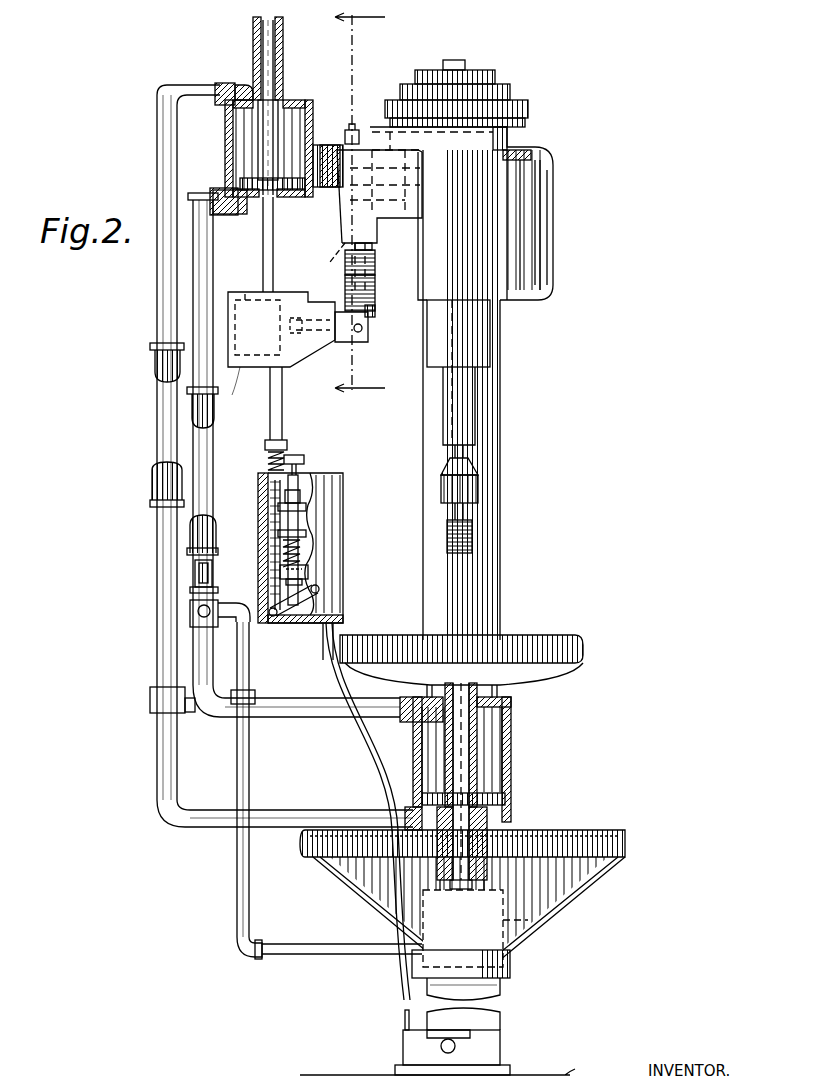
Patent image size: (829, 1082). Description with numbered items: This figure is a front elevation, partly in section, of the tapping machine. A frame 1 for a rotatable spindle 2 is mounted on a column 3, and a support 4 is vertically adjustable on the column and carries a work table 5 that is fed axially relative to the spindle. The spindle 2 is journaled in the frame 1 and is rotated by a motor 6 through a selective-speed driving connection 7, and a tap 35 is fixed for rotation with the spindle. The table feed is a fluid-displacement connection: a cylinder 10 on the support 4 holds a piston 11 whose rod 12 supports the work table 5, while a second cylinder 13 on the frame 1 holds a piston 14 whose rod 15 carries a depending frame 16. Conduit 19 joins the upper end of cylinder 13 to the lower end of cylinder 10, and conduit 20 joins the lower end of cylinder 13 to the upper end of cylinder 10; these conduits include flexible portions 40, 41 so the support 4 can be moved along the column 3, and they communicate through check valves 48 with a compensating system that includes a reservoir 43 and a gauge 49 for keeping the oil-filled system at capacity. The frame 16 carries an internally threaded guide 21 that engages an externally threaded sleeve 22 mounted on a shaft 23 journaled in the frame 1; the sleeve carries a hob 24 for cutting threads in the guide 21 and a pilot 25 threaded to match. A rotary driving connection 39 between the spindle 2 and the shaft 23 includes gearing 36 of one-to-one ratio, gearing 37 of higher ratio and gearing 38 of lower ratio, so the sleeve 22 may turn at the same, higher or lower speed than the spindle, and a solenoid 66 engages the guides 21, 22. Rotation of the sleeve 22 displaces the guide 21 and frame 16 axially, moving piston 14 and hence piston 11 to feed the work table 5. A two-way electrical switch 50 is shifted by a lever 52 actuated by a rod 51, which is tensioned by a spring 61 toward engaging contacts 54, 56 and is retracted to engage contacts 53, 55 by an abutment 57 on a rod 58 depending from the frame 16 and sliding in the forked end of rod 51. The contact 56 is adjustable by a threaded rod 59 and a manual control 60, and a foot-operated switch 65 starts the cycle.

The frame 1 is at (480, 188).
The spindle 2 is at (470, 350).
The column 3 is at (360, 199).
The support 4 is at (535, 842).
The work table 5 is at (575, 655).
The motor 6 is at (548, 236).
The selective-speed driving connection 7 is at (509, 76).
The cylinder 10 is at (510, 758).
The piston 11 is at (495, 800).
The piston rod 12 is at (455, 742).
The second cylinder 13 is at (290, 118).
The piston 14 is at (284, 178).
The piston rod 15 is at (276, 262).
The frame 16 is at (246, 370).
The conduit 19 is at (162, 265).
The conduit 20 is at (202, 278).
The threaded guide 21 is at (362, 338).
The threaded sleeve 22 is at (386, 321).
The shaft 23 is at (336, 257).
The hob 24 is at (345, 270).
The pilot 25 is at (377, 330).
The tap 35 is at (470, 530).
The gearing 36 is at (420, 182).
The gearing 37 is at (418, 212).
The gearing 38 is at (420, 160).
The rotary driving connection 39 is at (365, 130).
The flexible portion 40 is at (163, 413).
The flexible portion 41 is at (200, 470).
The reservoir 43 is at (540, 925).
The check valve 48 is at (244, 603).
The gauge 49 is at (208, 578).
The two-way electrical switch 50 is at (310, 540).
The rod 51 is at (270, 513).
The lever 52 is at (285, 625).
The contact 53 is at (310, 565).
The contact 54 is at (308, 530).
The contact 55 is at (306, 572).
The contact 56 is at (304, 490).
The abutment 57 is at (279, 436).
The rod 58 is at (278, 405).
The threaded rod 59 is at (258, 486).
The manual control 60 is at (300, 456).
The spring 61 is at (266, 455).
The switch 65 is at (405, 1038).
The solenoid 66 is at (247, 300).